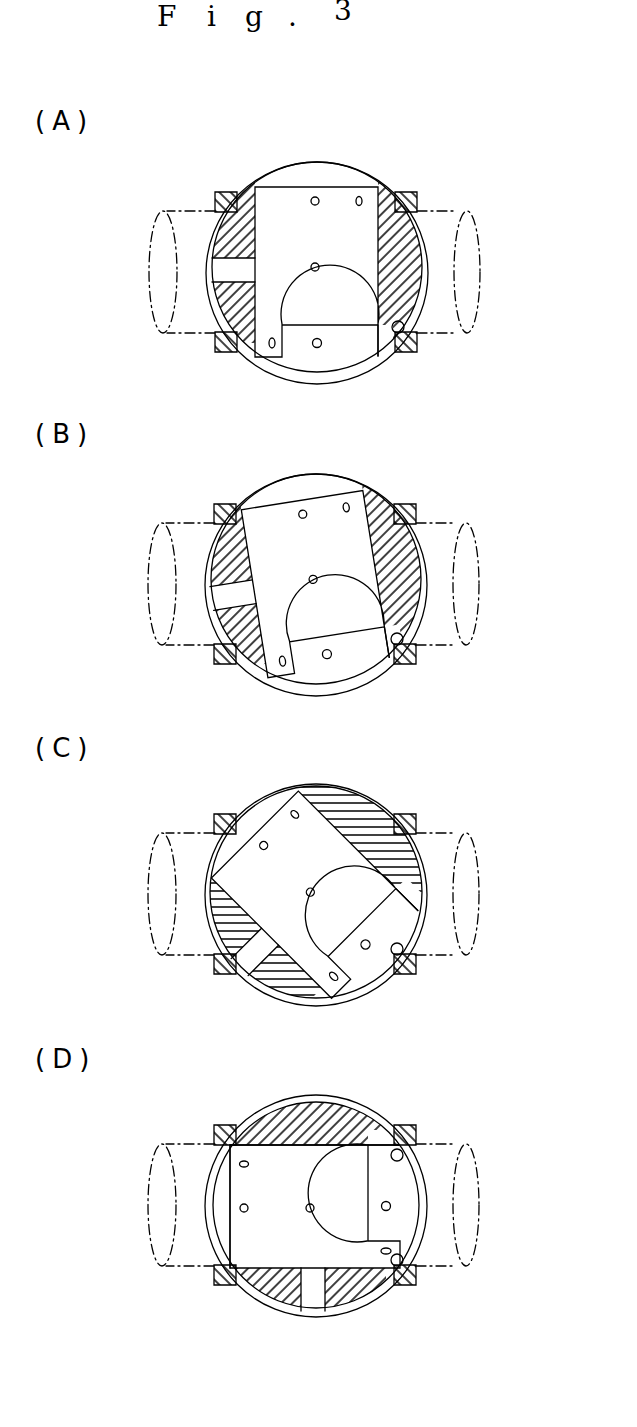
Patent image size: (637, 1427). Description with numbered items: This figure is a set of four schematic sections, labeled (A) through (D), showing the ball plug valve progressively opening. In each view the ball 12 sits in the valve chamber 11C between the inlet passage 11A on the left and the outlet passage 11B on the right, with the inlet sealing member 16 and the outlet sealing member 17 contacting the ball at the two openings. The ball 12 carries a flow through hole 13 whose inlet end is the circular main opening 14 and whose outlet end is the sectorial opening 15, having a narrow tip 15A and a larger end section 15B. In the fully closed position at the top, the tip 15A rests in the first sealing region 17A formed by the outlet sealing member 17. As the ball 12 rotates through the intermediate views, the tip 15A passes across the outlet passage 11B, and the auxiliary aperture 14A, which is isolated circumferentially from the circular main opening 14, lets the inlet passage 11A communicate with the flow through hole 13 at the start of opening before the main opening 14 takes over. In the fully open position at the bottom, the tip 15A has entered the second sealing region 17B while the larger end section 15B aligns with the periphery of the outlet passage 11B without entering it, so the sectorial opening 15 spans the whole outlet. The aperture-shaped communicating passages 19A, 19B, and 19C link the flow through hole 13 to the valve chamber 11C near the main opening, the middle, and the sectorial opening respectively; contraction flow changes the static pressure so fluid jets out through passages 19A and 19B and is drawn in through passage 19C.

The inlet passage 11A is at (165, 1145).
The outlet passage 11B is at (457, 834).
The valve chamber 11C is at (322, 1095).
The ball 12 is at (340, 1108).
The flow through hole 13 is at (290, 1186).
The circular main opening 14 is at (226, 1182).
The auxiliary aperture 14A is at (307, 1304).
The sectorial opening 15 is at (403, 1188).
The tip of the sectorial opening 15A is at (386, 1138).
The larger end section of the sectorial opening 15B is at (407, 1261).
The inlet sealing member 16 is at (230, 1127).
The outlet sealing member 17 is at (407, 1126).
The first sealing region 17A is at (404, 950).
The second sealing region 17B is at (403, 1153).
The communicating passage 19A is at (242, 1210).
The communicating passage 19B is at (305, 1212).
The communicating passage 19C is at (388, 1208).